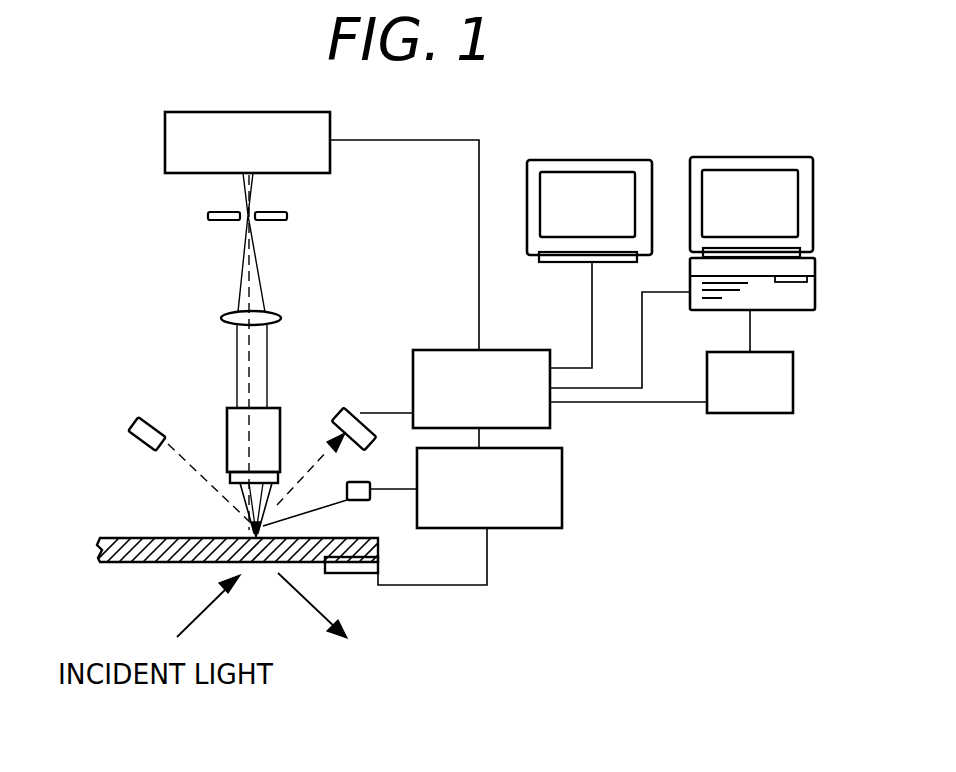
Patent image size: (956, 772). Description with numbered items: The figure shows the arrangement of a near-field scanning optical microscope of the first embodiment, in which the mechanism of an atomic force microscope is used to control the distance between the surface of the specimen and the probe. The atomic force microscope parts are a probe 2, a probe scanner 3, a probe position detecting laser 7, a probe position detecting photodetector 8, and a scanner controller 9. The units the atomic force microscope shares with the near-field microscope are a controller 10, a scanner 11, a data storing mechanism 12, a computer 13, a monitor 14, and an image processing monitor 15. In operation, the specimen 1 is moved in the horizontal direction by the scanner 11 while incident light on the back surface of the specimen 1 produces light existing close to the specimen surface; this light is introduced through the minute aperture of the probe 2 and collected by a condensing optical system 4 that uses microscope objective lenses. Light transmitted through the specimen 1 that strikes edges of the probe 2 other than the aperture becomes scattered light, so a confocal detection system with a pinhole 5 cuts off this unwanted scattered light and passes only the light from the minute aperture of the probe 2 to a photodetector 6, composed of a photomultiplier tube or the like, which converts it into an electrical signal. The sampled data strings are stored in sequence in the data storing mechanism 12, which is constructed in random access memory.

The specimen 1 is at (130, 547).
The probe 2 is at (340, 507).
The probe scanner 3 is at (363, 480).
The condensing optical system 4 is at (210, 310).
The pinhole 5 is at (208, 216).
The photodetector 6 is at (165, 127).
The probe position detecting laser 7 is at (132, 420).
The probe position detecting photodetector 8 is at (333, 408).
The scanner controller 9 is at (550, 528).
The controller 10 is at (447, 350).
The scanner 11 is at (355, 573).
The data storing mechanism 12 is at (793, 397).
The computer 13 is at (815, 272).
The monitor 14 is at (588, 160).
The image processing monitor 15 is at (750, 157).